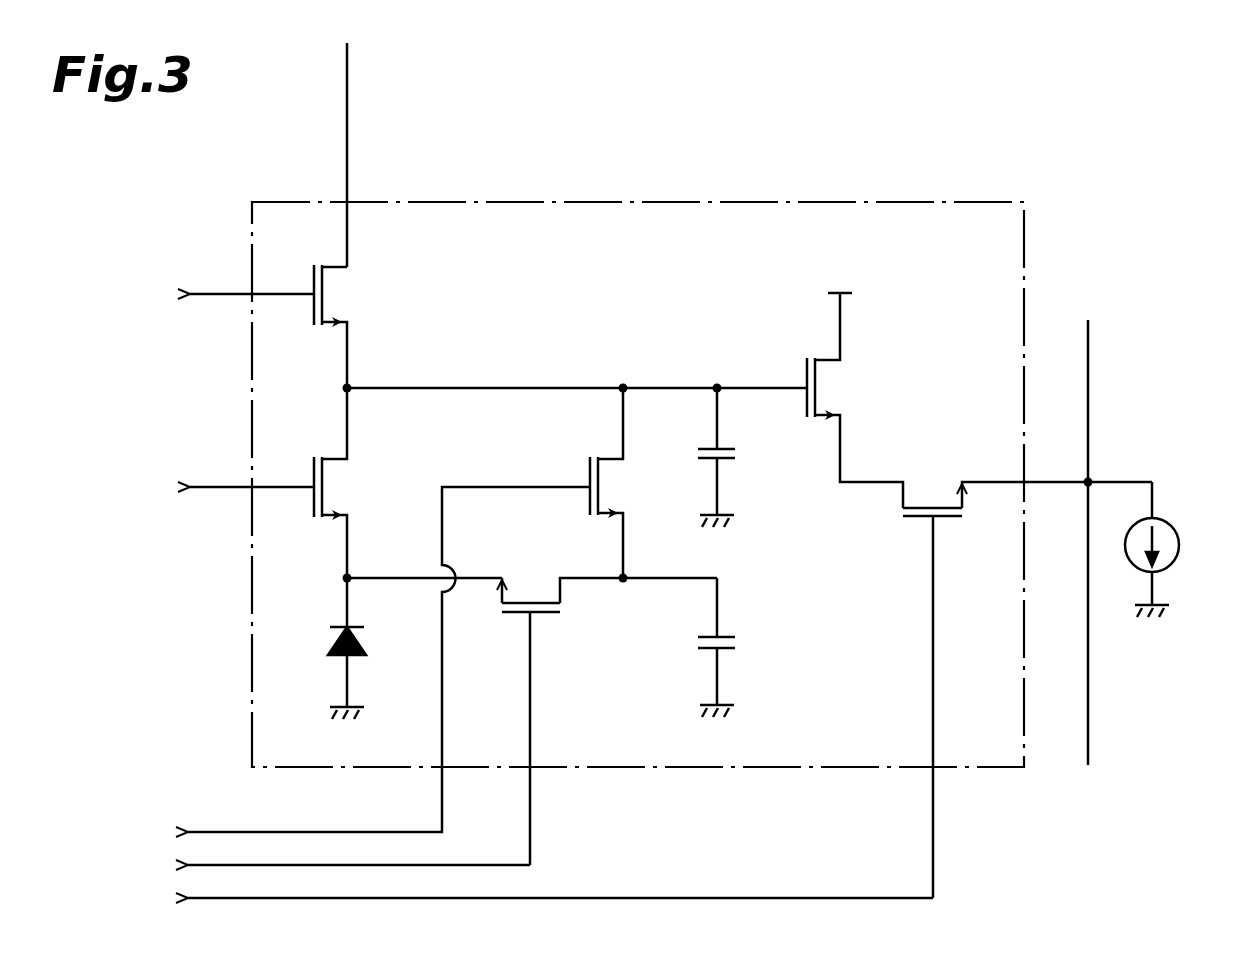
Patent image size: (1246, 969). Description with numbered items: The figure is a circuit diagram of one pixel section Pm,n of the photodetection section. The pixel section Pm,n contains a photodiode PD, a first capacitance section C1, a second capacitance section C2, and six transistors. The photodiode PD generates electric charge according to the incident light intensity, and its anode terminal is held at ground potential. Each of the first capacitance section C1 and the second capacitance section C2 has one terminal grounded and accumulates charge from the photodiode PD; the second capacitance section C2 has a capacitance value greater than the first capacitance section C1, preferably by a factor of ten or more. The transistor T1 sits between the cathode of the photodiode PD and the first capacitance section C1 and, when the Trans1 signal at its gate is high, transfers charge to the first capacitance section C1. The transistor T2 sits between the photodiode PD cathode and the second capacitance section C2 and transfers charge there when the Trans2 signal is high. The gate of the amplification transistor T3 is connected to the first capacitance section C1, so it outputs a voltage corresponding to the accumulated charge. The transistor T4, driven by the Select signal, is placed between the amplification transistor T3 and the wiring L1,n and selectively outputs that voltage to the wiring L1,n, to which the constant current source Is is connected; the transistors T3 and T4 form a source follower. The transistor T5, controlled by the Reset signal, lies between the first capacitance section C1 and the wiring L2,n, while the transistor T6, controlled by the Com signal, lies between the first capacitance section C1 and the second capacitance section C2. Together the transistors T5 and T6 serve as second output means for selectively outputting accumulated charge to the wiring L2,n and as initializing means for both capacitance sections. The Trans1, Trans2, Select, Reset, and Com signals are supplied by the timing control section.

The transistor T1 is at (349, 483).
The transistor T2 is at (560, 706).
The amplification transistor T3 is at (855, 400).
The transistor T4 is at (1027, 671).
The transistor T5 is at (349, 326).
The transistor T6 is at (625, 483).
The first capacitance section C1 is at (739, 457).
The second capacitance section C2 is at (739, 647).
The photodiode PD is at (363, 648).
The wiring L1,n is at (1090, 700).
The wiring L2,n is at (349, 112).
The pixel section Pm,n is at (833, 201).
The Reset signal Reset is at (203, 293).
The Trans1 signal Trans1 is at (196, 486).
The Trans2 signal Trans2 is at (304, 864).
The Com signal Com is at (349, 667).
The Select signal Select is at (510, 897).
The constant current source Is is at (1152, 549).